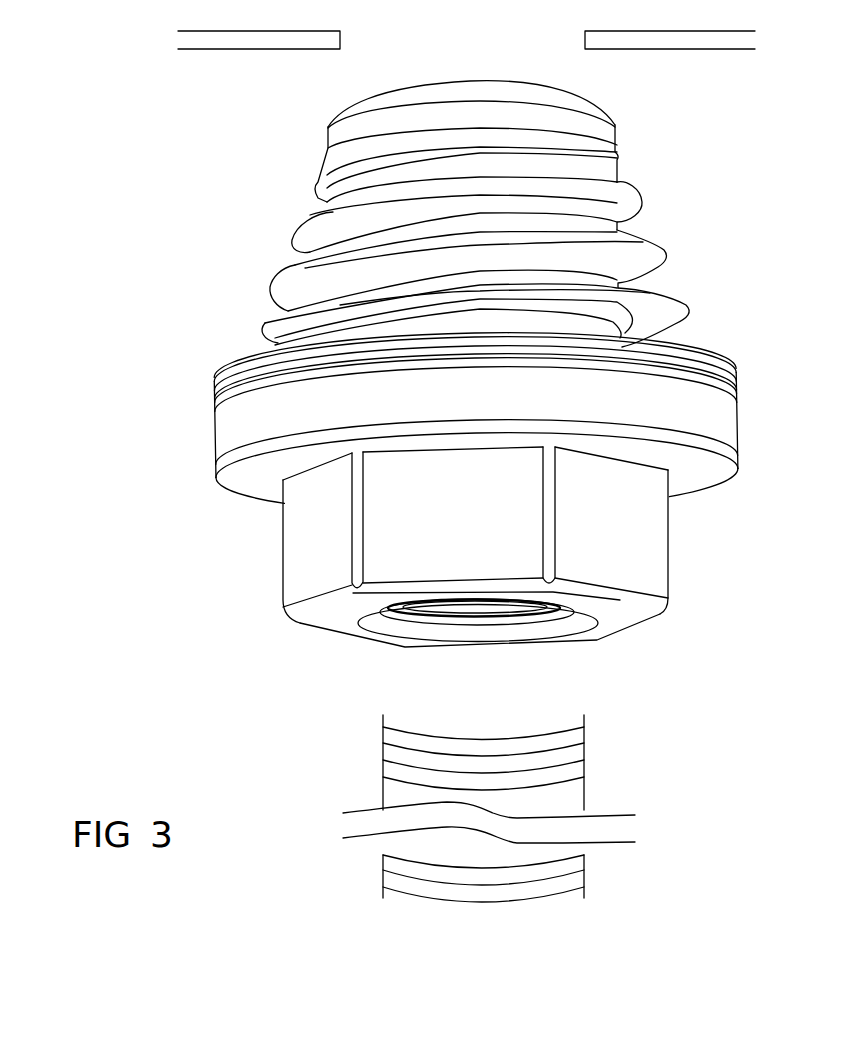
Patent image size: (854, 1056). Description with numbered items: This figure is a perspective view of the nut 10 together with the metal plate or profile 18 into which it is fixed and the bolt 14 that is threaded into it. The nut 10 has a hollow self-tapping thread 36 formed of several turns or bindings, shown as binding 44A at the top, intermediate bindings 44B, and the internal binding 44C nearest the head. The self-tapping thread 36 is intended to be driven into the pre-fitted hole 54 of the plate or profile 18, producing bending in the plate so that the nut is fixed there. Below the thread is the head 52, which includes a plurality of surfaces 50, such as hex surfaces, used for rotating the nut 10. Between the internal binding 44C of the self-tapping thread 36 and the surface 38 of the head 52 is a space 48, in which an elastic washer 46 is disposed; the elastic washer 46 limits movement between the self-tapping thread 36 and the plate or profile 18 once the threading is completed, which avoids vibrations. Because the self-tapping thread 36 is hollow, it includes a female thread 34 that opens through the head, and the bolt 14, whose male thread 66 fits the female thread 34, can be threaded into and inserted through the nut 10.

The nut 10 is at (424, 579).
The bolt 14 is at (528, 808).
The plate or profile 18 is at (220, 57).
The female thread 34 is at (512, 604).
The self-tapping thread 36 is at (382, 214).
The surface of head 38 is at (425, 417).
The binding of self-tapping thread 44A is at (617, 154).
The binding of self-tapping thread 44B is at (293, 264).
The internal binding 44C is at (266, 322).
The elastic washer 46 is at (213, 391).
The space 48 is at (268, 344).
The surfaces 50 is at (322, 542).
The head 52 is at (390, 565).
The pre-fitted hole 54 is at (428, 30).
The male thread 66 is at (572, 745).